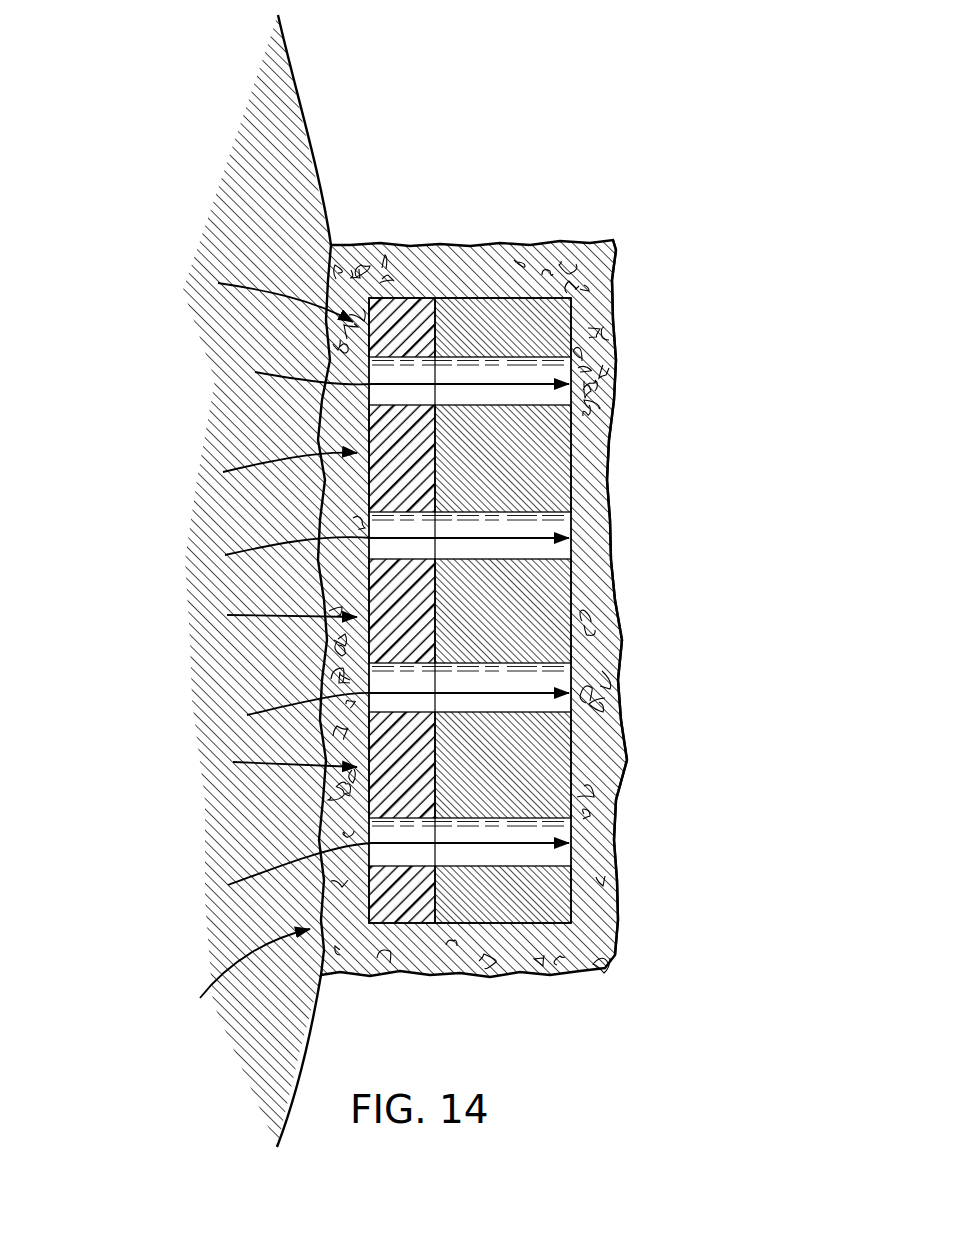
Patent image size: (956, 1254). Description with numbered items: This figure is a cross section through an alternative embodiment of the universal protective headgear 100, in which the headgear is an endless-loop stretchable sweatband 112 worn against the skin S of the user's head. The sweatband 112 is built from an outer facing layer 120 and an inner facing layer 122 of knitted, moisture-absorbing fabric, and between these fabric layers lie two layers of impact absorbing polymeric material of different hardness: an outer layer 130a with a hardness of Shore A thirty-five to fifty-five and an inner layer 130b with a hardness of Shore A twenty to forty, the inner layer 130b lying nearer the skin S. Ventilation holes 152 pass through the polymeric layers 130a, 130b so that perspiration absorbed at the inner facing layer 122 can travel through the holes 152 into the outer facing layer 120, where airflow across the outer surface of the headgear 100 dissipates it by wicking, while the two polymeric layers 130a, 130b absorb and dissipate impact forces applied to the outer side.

The skin S is at (318, 133).
The universal protective headgear 100 is at (441, 590).
The stretchable sweatband 112 is at (622, 398).
The outer facing layer 120 is at (610, 575).
The inner facing layer 122 is at (337, 672).
The outer layer of impact absorbing polymeric material 130a is at (505, 316).
The inner layer of impact absorbing polymeric material 130b is at (380, 332).
The ventilation holes 152 is at (547, 370).